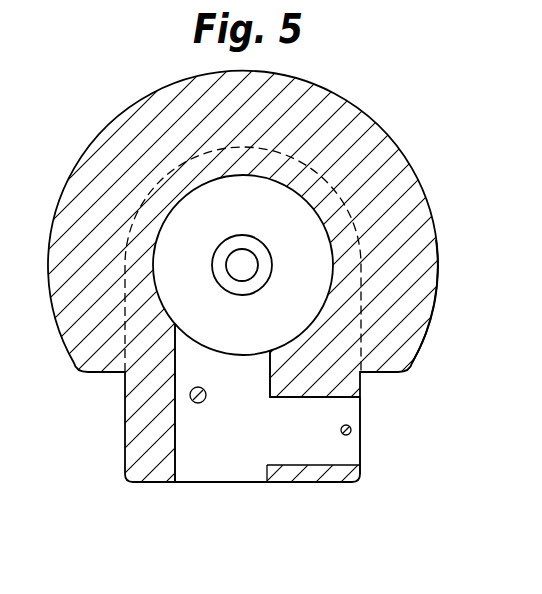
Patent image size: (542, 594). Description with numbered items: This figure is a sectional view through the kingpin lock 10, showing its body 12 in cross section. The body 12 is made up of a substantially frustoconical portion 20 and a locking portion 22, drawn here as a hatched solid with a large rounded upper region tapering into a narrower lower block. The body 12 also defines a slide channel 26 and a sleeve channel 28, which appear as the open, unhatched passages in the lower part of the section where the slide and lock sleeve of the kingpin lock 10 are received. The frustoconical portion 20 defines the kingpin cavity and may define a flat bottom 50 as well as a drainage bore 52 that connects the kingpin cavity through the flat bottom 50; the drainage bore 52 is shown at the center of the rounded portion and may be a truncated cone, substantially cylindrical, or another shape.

The kingpin lock 10 is at (271, 297).
The body 12 is at (418, 194).
The frustoconical portion 20 is at (428, 295).
The locking portion 22 is at (360, 475).
The slide channel 26 is at (243, 385).
The sleeve channel 28 is at (306, 450).
The flat bottom 50 is at (541, 133).
The drainage bore 52 is at (252, 253).